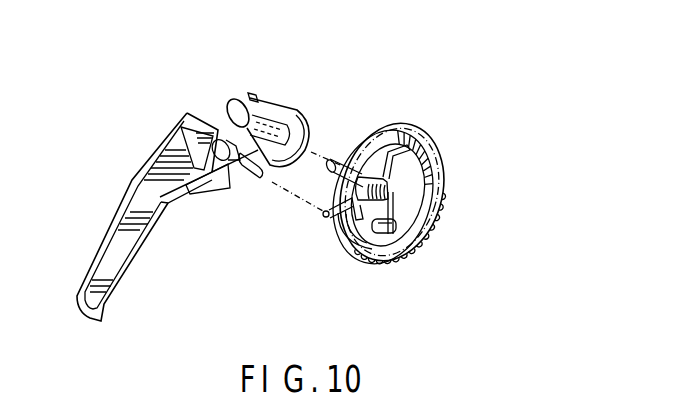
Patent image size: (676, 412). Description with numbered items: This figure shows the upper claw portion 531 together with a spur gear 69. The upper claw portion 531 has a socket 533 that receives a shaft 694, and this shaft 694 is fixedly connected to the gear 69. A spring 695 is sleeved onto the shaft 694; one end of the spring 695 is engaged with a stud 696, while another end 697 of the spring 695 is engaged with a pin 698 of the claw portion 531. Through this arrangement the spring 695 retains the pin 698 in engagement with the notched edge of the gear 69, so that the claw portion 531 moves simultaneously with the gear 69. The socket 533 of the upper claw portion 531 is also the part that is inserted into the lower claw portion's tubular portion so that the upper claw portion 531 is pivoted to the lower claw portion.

The upper claw portion 531 is at (123, 253).
The socket 533 is at (237, 108).
The gear 69 is at (413, 200).
The shaft 694 is at (362, 172).
The spring 695 is at (387, 147).
The stud 696 is at (400, 233).
The another end of the spring 697 is at (326, 218).
The pin 698 is at (255, 178).